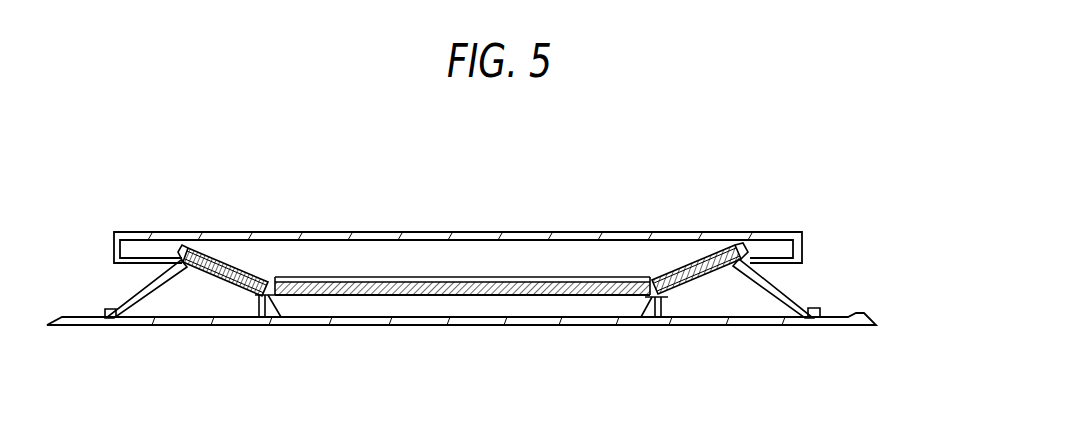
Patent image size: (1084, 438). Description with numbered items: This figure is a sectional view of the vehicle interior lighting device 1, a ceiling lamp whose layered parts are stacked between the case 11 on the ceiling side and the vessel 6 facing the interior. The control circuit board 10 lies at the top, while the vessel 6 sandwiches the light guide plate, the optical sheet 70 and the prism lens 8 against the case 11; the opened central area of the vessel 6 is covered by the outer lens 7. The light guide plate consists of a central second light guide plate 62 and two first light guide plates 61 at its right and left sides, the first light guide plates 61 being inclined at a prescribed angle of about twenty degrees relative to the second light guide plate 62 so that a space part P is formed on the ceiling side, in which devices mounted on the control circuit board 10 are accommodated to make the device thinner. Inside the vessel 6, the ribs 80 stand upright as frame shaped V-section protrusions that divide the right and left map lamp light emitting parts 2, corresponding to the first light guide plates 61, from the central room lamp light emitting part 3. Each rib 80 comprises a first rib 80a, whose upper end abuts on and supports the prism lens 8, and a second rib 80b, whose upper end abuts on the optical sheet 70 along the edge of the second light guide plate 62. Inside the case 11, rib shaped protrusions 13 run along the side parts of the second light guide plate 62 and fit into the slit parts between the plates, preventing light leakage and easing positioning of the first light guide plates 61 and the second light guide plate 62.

The lighting device 1 is at (781, 176).
The map lamp light emitting part 2 is at (260, 337).
The room lamp light emitting part 3 is at (650, 337).
The vessel 6 is at (863, 313).
The outer lens 7 is at (812, 327).
The prism lens 8 is at (213, 264).
The control circuit board 10 is at (770, 232).
The case 11 is at (465, 277).
The rib shaped protrusion 13 is at (272, 281).
The first light guide plate 61 is at (222, 253).
The second light guide plate 62 is at (540, 288).
The optical sheet 70 is at (257, 262).
The rib 80 is at (460, 361).
The first rib 80a is at (257, 300).
The second rib 80b is at (273, 300).
The space part P is at (505, 257).